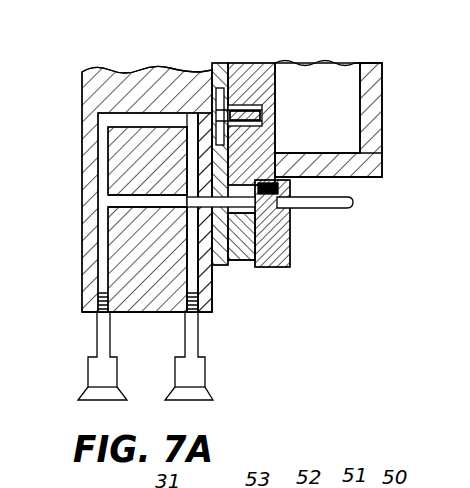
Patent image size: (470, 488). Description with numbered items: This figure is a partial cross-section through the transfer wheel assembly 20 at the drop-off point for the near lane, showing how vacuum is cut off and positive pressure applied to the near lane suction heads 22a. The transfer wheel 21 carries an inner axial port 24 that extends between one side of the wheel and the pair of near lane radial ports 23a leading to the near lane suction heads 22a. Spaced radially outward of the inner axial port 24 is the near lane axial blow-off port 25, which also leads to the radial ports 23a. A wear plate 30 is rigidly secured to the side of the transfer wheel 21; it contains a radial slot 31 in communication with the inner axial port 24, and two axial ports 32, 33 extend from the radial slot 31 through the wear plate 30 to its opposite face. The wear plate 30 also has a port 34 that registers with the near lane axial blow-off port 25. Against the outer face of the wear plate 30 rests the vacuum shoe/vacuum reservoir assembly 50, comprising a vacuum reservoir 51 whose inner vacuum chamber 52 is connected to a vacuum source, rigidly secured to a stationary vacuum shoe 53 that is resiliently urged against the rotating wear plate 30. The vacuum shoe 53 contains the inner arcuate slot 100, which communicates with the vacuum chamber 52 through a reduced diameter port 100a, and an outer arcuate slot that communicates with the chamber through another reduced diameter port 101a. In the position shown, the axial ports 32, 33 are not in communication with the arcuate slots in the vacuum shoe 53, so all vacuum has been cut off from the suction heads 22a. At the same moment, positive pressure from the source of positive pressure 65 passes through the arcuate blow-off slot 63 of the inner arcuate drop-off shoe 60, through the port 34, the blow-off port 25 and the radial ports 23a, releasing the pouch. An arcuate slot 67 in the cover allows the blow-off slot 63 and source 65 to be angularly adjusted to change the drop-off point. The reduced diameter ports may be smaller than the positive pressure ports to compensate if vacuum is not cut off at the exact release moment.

The transfer wheel assembly 20 is at (62, 312).
The transfer wheel 21 is at (155, 313).
The near lane suction heads 22a is at (77, 386).
The near lane radial ports 23a is at (188, 260).
The inner axial port 24 is at (115, 118).
The near lane axial blow-off port 25 is at (120, 202).
The wear plate 30 is at (223, 268).
The radial slot 31 is at (212, 88).
The axial port 32 is at (286, 64).
The axial port 33 is at (230, 144).
The port 34 is at (197, 228).
The vacuum shoe/vacuum reservoir assembly 50 is at (393, 177).
The vacuum reservoir 51 is at (380, 87).
The vacuum chamber 52 is at (343, 80).
The vacuum shoe 53 is at (258, 54).
The inner arcuate drop-off shoe 60 is at (303, 156).
The arcuate blow-off slot 63 is at (244, 261).
The source of positive pressure 65 is at (351, 209).
The arcuate slot in cover 67 is at (291, 214).
The inner arcuate slot 100 is at (283, 80).
The reduced diameter port 100a is at (283, 97).
The reduced diameter port 101a is at (283, 115).